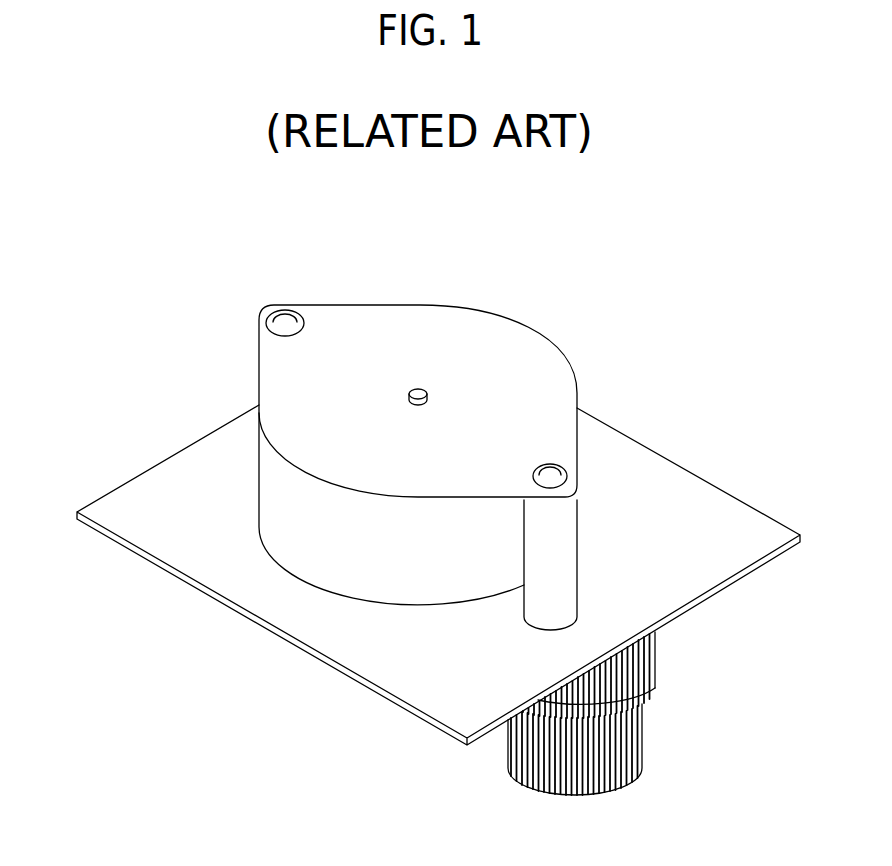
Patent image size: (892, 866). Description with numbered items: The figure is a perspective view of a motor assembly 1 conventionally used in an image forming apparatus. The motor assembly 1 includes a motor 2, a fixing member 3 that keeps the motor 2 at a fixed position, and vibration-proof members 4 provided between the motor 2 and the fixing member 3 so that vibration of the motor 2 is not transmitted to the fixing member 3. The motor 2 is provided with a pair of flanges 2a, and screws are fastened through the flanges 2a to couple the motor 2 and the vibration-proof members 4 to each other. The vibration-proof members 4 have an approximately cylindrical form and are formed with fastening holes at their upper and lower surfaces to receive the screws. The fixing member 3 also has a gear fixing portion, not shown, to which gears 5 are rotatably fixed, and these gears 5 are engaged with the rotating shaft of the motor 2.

The motor assembly 1 is at (451, 226).
The motor 2 is at (297, 537).
The flanges 2a is at (256, 332).
The fixing member 3 is at (150, 483).
The vibration-proof members 4 is at (568, 570).
The gears 5 is at (643, 745).